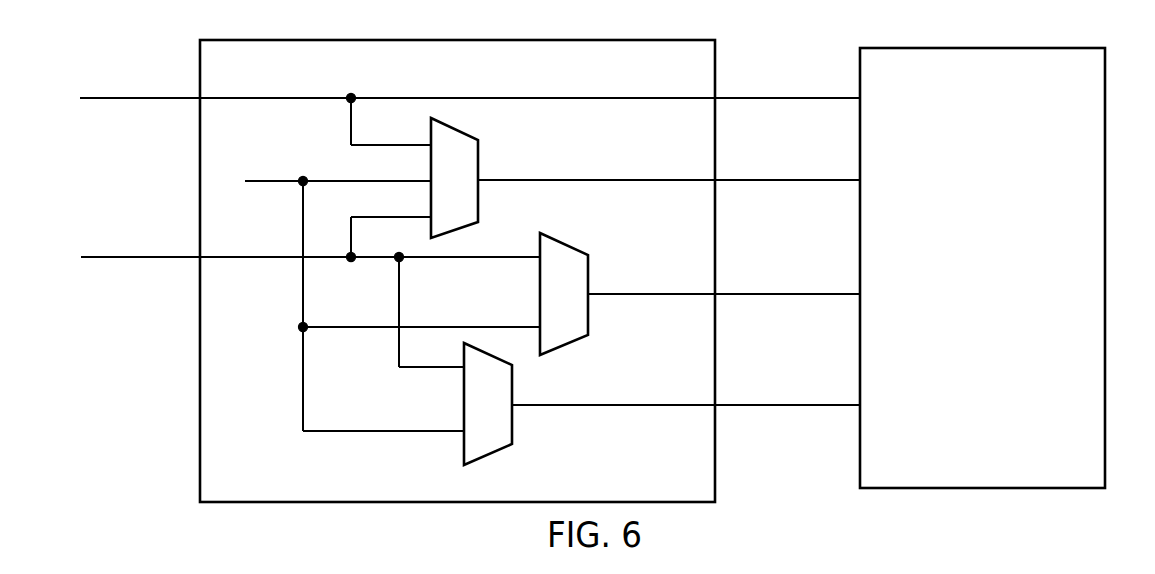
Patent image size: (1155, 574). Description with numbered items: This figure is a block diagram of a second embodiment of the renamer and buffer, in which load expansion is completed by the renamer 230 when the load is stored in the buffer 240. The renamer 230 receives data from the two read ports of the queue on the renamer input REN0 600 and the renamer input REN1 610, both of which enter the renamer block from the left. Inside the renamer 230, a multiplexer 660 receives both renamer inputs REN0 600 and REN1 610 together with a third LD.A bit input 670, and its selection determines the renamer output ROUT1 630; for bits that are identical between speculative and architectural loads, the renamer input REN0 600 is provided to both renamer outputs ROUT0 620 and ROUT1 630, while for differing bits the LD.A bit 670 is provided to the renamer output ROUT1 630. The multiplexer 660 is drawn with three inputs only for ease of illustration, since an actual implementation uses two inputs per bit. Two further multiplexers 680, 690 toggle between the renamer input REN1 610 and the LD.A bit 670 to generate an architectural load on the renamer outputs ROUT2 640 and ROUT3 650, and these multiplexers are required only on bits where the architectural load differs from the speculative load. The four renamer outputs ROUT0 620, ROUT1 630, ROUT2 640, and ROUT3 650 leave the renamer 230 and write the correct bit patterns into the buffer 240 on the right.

The renamer 230 is at (690, 475).
The buffer 240 is at (1085, 469).
The renamer input REN0 600 is at (166, 100).
The renamer input REN1 610 is at (165, 258).
The renamer output ROUT0 620 is at (746, 100).
The renamer output ROUT1 630 is at (740, 182).
The renamer output ROUT2 640 is at (750, 297).
The renamer output ROUT3 650 is at (740, 408).
The multiplexer 660 is at (481, 149).
The LD.A bit input 670 is at (260, 184).
The multiplexer 680 is at (590, 263).
The multiplexer 690 is at (514, 384).